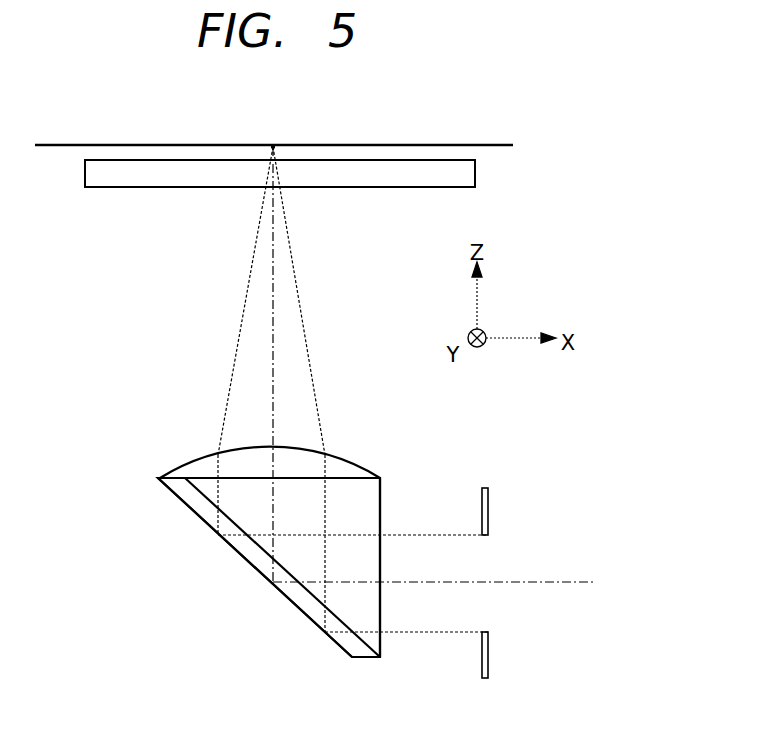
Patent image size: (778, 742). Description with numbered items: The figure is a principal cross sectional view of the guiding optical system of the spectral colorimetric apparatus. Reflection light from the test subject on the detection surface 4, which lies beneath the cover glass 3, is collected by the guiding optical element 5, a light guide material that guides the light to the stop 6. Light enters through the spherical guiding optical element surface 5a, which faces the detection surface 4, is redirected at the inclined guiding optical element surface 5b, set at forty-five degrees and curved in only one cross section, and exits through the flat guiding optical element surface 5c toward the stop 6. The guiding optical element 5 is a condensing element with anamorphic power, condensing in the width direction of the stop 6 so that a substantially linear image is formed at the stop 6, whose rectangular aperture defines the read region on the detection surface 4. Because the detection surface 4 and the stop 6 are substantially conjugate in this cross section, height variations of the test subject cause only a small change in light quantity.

The cover glass 3 is at (126, 190).
The detection surface 4 is at (273, 146).
The guiding optical element 5 is at (213, 485).
The guiding optical element surface 5a is at (275, 448).
The guiding optical element surface 5b is at (270, 582).
The guiding optical element surface 5c is at (380, 582).
The stop 6 is at (484, 488).